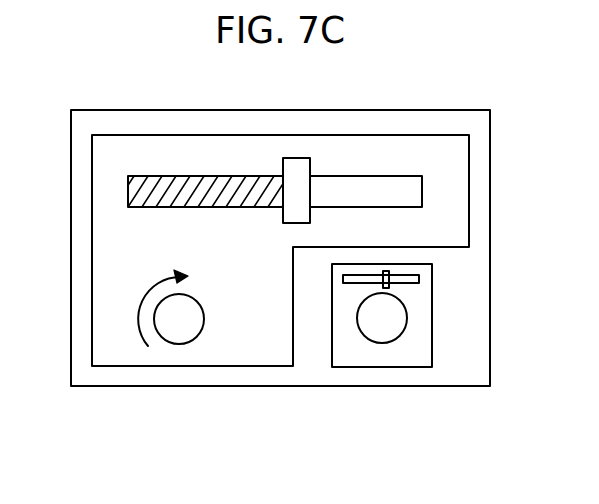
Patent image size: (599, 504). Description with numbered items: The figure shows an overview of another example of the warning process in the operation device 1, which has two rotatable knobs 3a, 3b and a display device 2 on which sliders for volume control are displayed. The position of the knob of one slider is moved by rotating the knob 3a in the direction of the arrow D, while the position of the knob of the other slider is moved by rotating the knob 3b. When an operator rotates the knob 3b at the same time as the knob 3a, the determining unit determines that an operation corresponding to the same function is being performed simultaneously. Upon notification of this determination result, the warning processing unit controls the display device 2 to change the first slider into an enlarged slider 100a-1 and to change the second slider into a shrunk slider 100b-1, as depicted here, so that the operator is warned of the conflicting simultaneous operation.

The operation device 1 is at (504, 109).
The display device 2 is at (490, 208).
The enlarged slider 100a-1 is at (152, 176).
The knob 3a is at (176, 344).
The arrow direction D is at (142, 300).
The shrunk slider 100b-1 is at (352, 283).
The knob 3b is at (395, 340).